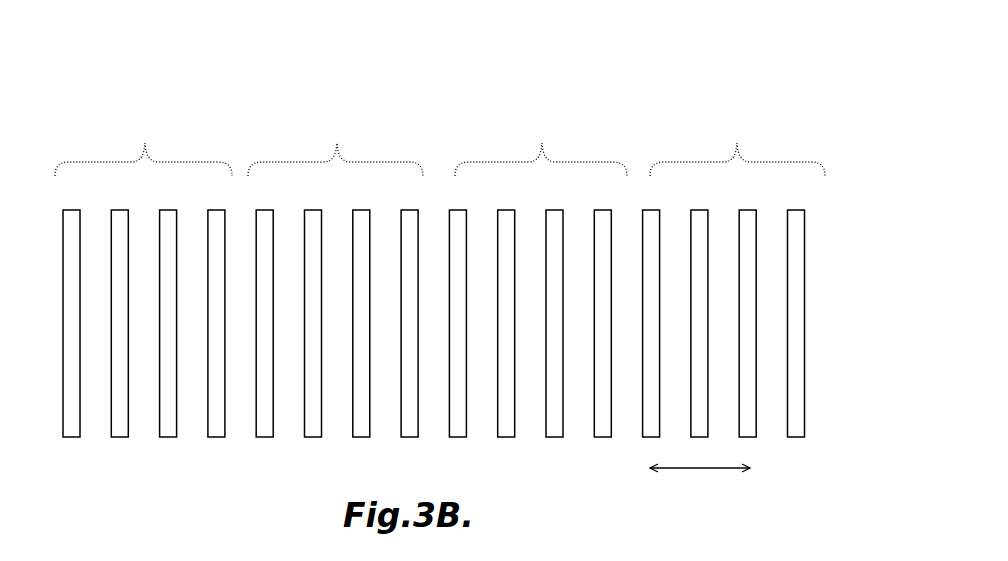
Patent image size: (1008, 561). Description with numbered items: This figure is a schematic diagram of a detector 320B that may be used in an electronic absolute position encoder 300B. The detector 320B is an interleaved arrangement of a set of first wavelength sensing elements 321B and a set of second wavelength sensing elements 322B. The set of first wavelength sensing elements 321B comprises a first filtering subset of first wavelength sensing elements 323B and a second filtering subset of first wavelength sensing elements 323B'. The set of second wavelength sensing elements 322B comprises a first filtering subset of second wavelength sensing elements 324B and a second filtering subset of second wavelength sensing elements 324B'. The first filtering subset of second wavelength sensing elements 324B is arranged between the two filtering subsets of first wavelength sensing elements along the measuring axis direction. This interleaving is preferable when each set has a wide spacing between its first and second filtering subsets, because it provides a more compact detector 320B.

The electronic absolute position encoder 300B is at (447, 259).
The detector 320B is at (683, 55).
The set of first wavelength sensing elements 321B is at (507, 123).
The set of second wavelength sensing elements 322B is at (370, 127).
The first filtering subset of first wavelength sensing elements 323B is at (143, 278).
The first filtering subset of second wavelength sensing elements 324B is at (335, 278).
The second filtering subset of first wavelength sensing elements 323B' is at (535, 278).
The second filtering subset of second wavelength sensing elements 324B' is at (730, 278).